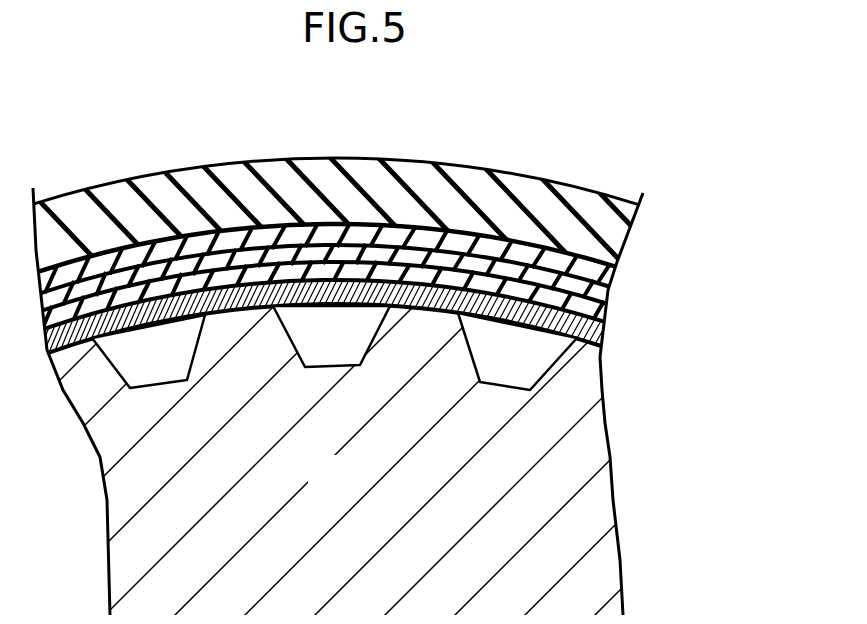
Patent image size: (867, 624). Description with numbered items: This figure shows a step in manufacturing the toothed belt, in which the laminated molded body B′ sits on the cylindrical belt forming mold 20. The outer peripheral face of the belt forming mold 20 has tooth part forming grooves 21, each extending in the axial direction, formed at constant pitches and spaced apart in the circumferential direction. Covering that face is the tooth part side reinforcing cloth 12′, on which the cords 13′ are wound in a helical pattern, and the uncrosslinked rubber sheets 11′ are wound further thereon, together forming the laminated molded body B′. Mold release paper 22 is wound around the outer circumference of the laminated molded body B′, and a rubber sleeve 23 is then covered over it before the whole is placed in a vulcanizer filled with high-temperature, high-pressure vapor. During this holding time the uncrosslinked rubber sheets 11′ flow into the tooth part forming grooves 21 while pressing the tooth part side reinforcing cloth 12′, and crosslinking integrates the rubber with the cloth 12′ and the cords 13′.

The laminated molded body B′ is at (590, 257).
The rubber sleeve 23 is at (323, 178).
The mold release paper 22 is at (155, 238).
The uncrosslinked rubber sheets 11′ is at (494, 283).
The tooth part side reinforcing cloth 12′ is at (135, 322).
The cords 13′ is at (315, 305).
The belt forming mold 20 is at (352, 489).
The tooth part forming grooves 21 is at (195, 330).